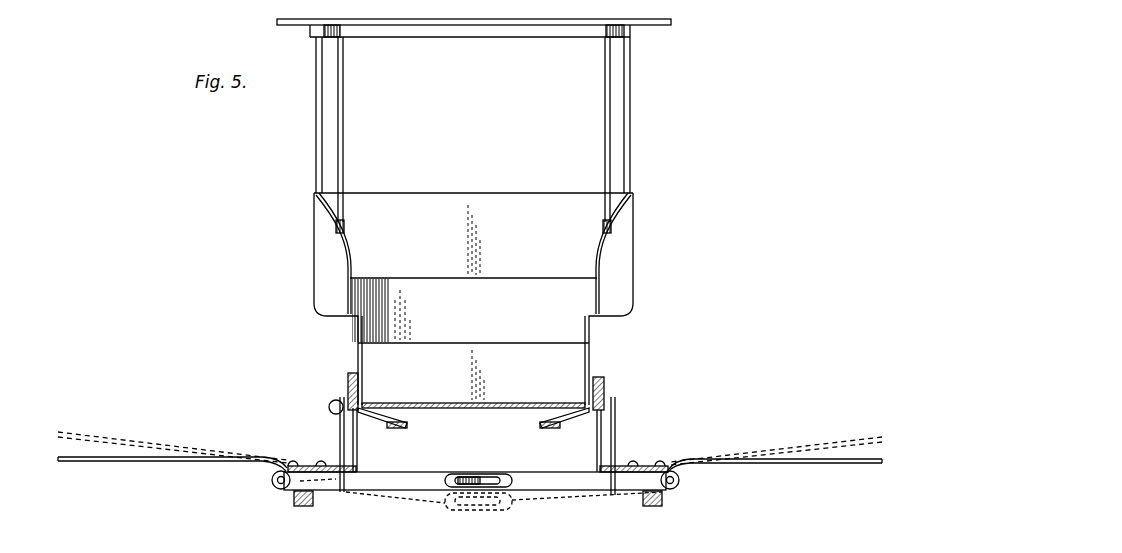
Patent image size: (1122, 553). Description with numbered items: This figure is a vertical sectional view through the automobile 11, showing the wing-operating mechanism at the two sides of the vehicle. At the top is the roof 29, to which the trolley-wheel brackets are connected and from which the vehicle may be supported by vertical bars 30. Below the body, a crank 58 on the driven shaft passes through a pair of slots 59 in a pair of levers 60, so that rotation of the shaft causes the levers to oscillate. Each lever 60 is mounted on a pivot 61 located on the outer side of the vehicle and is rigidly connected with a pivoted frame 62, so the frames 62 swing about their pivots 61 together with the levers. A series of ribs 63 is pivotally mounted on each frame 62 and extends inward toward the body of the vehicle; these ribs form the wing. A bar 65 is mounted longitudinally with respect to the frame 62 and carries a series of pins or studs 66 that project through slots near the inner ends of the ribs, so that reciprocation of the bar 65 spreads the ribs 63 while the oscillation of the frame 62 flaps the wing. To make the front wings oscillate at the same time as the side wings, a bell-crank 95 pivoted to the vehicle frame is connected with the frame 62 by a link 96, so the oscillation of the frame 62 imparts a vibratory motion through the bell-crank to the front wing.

The roof 29 is at (476, 22).
The vertical bars 30 is at (605, 100).
The automobile 11 is at (520, 200).
The bell-crank 95 is at (350, 394).
The link 96 is at (346, 436).
The bar 65 is at (318, 462).
The pins or studs 66 is at (322, 462).
The pivoted frame 62 is at (292, 463).
The pivots 61 is at (282, 489).
The ribs 63 is at (184, 462).
The crank 58 is at (470, 476).
The slots 59 is at (492, 478).
The levers 60 is at (540, 473).